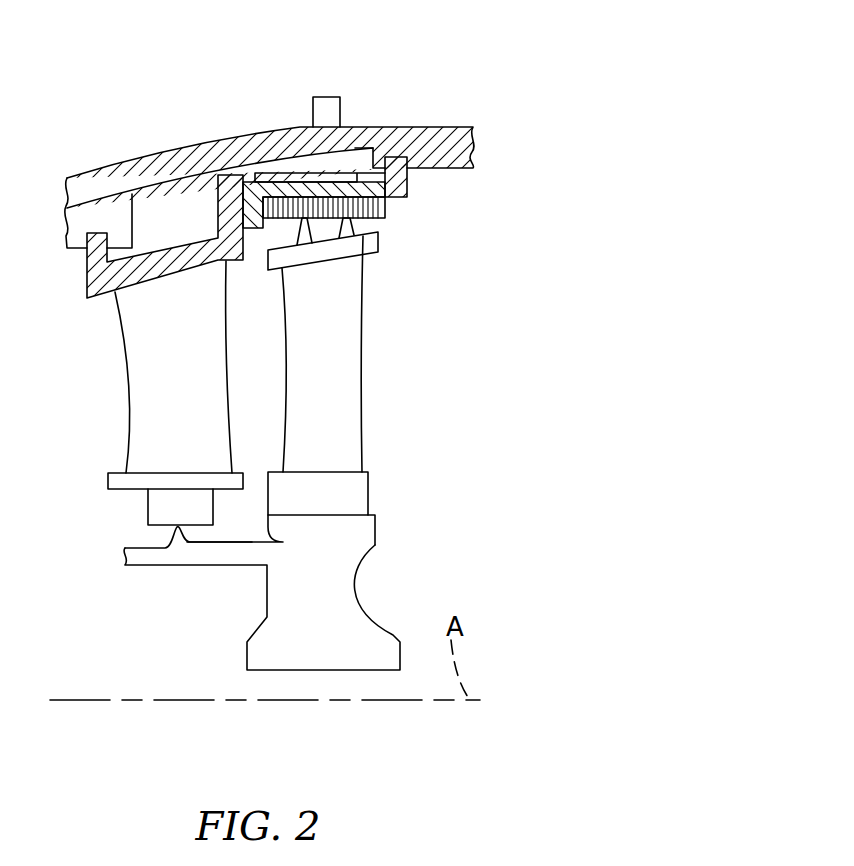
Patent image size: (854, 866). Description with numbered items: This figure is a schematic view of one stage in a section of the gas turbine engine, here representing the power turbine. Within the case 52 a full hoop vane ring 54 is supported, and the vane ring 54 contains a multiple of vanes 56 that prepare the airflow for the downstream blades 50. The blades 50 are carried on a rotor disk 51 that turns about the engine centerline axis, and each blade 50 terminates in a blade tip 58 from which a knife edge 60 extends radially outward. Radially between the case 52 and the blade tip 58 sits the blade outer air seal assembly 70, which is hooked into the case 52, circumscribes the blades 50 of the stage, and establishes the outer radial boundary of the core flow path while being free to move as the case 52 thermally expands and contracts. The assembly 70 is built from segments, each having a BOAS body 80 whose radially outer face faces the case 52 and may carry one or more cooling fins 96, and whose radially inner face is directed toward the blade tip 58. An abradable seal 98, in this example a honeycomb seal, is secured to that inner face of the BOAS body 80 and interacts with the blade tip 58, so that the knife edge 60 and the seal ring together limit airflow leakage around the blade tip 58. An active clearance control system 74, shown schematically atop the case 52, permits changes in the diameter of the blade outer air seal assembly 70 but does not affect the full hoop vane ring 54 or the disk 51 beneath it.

The blade 50 is at (310, 382).
The rotor disk 51 is at (332, 607).
The case 52 is at (434, 131).
The full hoop vane ring 54 is at (133, 393).
The vane 56 is at (188, 383).
The blade tip 58 is at (381, 247).
The knife edge 60 is at (310, 234).
The blade outer air seal (BOAS) assembly 70 is at (283, 162).
The active clearance control system 74 is at (326, 98).
The BOAS body 80 is at (408, 178).
The cooling fin 96 is at (348, 175).
The abradable seal 98 is at (386, 209).